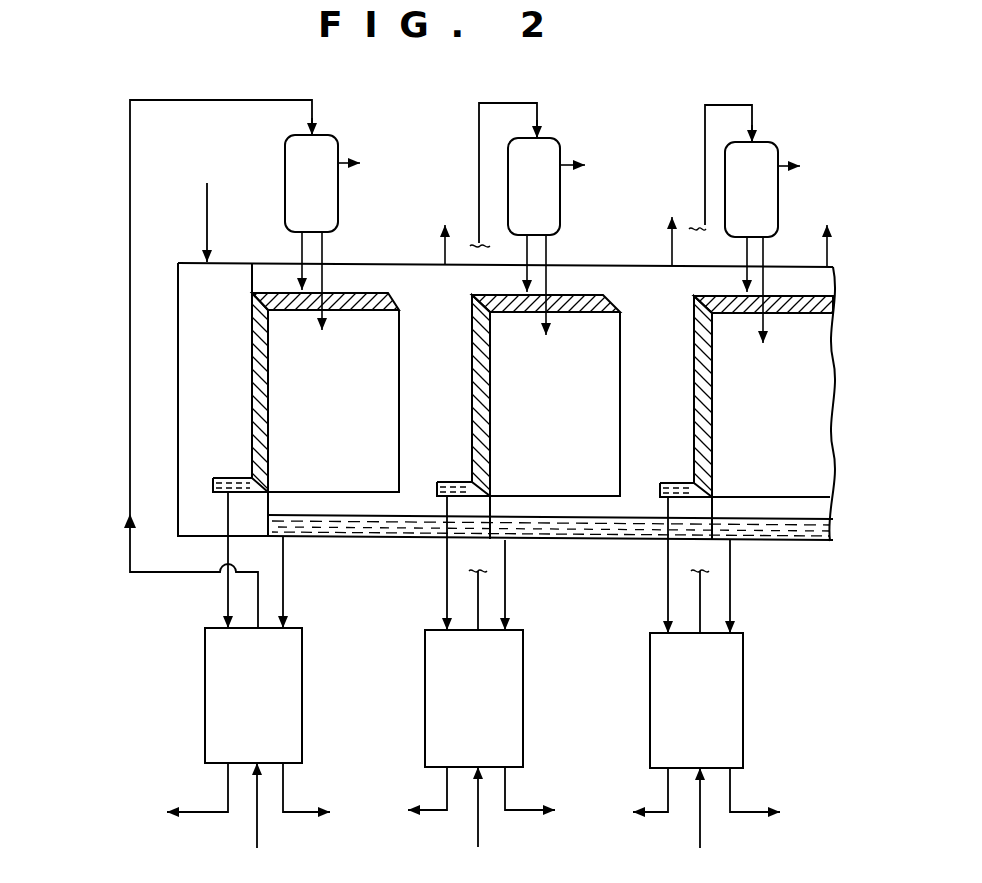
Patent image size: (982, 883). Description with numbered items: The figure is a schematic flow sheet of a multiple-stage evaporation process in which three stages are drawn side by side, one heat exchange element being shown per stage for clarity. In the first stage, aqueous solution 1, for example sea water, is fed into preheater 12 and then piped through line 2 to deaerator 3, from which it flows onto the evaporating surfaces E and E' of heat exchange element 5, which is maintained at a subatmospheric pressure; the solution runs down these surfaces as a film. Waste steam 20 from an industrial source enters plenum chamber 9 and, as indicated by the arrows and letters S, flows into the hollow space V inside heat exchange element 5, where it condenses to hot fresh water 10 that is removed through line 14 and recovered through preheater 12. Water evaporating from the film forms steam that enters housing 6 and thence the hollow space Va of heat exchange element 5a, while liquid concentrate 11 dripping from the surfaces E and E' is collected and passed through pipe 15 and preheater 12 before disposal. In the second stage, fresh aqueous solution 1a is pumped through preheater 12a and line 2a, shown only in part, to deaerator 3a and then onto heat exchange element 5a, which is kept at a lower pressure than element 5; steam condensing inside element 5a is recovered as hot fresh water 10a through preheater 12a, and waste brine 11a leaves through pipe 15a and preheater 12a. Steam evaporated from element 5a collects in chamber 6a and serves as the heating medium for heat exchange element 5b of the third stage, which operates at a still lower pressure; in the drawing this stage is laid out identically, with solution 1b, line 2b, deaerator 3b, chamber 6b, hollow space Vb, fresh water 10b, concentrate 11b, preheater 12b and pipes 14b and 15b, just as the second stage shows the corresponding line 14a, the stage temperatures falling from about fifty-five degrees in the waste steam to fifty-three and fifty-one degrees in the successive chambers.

The aqueous solution 1 is at (263, 818).
The fresh aqueous solution 1a is at (485, 821).
The feed inlet conduit 1b is at (709, 822).
The line 2 is at (130, 297).
The line 2a is at (479, 140).
The recycle conduit 2b is at (705, 126).
The deaerator 3 is at (303, 199).
The deaerator 3a is at (580, 236).
The separator vessel 3b is at (795, 242).
The heat exchange element 5 is at (399, 330).
The heat exchange element 5a is at (620, 333).
The heat exchange element 5b is at (828, 380).
The housing 6 is at (409, 294).
The chamber 6a is at (630, 295).
The housing compartment 6b is at (790, 295).
The plenum chamber 9 is at (192, 309).
The fresh water 10 is at (214, 478).
The hot fresh water 10a is at (450, 482).
The collecting tray 10b is at (670, 483).
The liquid concentrate 11 is at (358, 515).
The waste brine 11a is at (580, 518).
The liquid trough 11b is at (787, 519).
The preheater 12 is at (253, 695).
The preheater 12a is at (474, 698).
The processing unit 12b is at (696, 700).
The line 14 is at (228, 596).
The tray outlet conduit 14a is at (447, 555).
The tray outlet conduit 14b is at (668, 560).
The pipe 15 is at (283, 568).
The pipe 15a is at (505, 578).
The trough outlet conduit 15b is at (730, 578).
The waste steam 20 is at (204, 209).
The evaporating surface E is at (333, 326).
The evaporating surface E' is at (325, 288).
The steam direction arrows S is at (251, 348).
The hollow space V is at (252, 447).
The hollow space Va is at (472, 446).
The vapor stream Vb is at (694, 450).